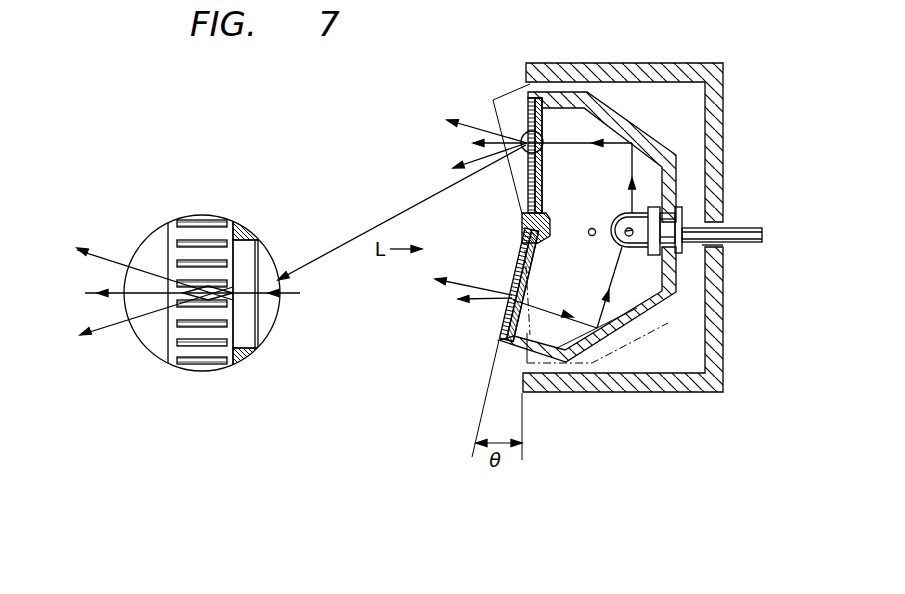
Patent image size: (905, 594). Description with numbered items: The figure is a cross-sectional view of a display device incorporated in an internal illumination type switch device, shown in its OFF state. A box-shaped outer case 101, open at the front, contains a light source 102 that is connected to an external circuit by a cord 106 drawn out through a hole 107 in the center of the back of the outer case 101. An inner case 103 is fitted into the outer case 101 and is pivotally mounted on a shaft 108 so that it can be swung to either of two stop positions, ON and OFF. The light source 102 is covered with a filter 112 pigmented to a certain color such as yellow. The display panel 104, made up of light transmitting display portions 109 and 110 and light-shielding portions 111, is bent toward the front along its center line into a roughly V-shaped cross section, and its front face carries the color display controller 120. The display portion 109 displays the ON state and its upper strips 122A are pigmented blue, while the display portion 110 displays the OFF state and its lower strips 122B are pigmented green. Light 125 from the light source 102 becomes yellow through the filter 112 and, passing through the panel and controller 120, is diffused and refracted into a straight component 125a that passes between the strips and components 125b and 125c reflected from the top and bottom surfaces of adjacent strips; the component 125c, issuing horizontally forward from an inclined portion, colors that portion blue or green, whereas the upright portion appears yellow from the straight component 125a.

The outer case 101 is at (722, 107).
The light source 102 is at (645, 302).
The case 103 is at (676, 160).
The display panel 104 is at (552, 184).
The cord 106 is at (750, 232).
The hole 107 is at (722, 248).
The shaft 108 is at (590, 236).
The display portion 109 is at (545, 140).
The display portion 110 is at (526, 292).
The light-shielding portion 111 is at (245, 232).
The filter 112 is at (614, 222).
The color display controller 120 is at (158, 338).
The upper strips 122A is at (528, 198).
The lower strips 122B is at (522, 228).
The light 125 is at (605, 142).
The straight light component 125a is at (496, 142).
The reflected light component 125b is at (470, 122).
The reflected light component 125c is at (468, 162).